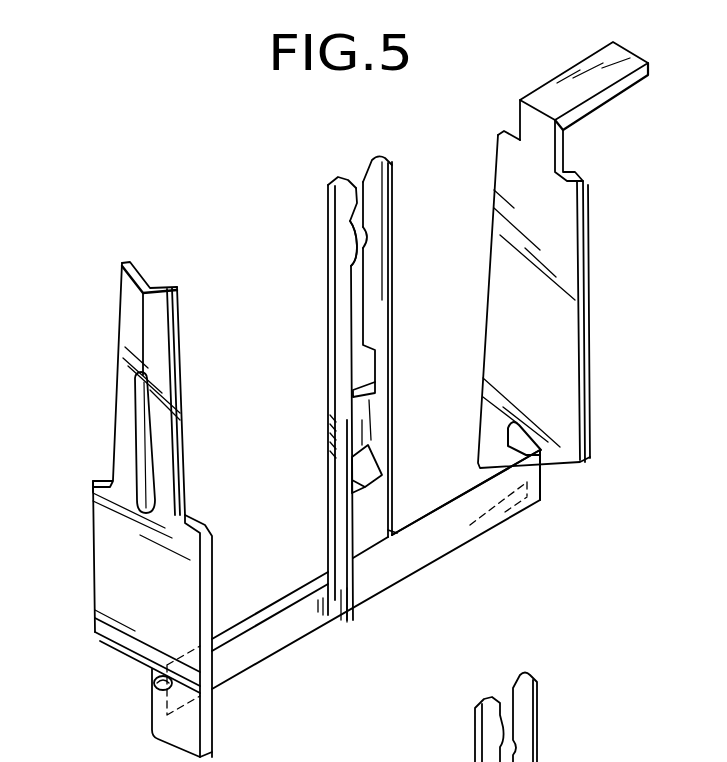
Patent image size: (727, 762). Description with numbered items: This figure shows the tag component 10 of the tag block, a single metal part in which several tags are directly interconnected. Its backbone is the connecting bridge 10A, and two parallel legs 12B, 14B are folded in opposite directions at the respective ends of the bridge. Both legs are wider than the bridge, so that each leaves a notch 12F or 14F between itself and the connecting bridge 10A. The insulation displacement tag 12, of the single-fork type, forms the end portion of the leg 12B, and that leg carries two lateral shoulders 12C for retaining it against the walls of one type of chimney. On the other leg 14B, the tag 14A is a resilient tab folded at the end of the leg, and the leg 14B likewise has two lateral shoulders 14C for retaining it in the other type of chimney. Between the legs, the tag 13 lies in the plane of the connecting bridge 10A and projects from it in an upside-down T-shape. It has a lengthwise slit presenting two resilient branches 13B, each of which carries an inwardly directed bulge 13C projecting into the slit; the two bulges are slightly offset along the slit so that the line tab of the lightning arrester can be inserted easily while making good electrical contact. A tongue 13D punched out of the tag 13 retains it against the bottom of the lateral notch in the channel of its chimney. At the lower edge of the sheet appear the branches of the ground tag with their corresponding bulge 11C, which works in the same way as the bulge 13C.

The tag component 10 is at (365, 606).
The connecting bridge 10A is at (433, 538).
The bulge 11C is at (517, 750).
The insulation displacement tag 12 is at (128, 329).
The leg 12B is at (115, 538).
The lateral shoulders 12C is at (110, 477).
The notch 12F is at (158, 678).
The tag 13 is at (360, 389).
The resilient branches 13B is at (347, 316).
The bulge 13C is at (358, 272).
The tongue 13D is at (368, 467).
The tag 14A is at (582, 78).
The leg 14B is at (557, 344).
The lateral shoulders 14C is at (568, 175).
The notch 14F is at (548, 447).